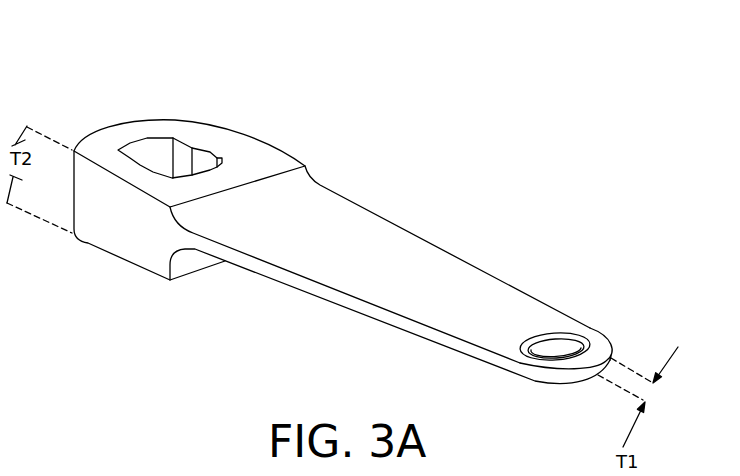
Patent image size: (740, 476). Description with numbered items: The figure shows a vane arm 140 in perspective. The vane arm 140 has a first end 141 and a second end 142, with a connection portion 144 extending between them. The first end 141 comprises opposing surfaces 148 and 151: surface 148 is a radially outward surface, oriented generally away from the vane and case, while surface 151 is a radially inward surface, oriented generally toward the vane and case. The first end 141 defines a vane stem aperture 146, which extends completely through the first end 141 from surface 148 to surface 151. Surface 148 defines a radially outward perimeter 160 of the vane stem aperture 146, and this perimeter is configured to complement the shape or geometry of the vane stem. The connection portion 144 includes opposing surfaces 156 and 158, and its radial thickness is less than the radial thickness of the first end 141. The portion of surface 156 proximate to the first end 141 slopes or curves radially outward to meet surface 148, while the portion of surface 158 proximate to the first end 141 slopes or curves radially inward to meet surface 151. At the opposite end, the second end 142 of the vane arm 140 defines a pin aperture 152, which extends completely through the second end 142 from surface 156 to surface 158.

The vane arm 140 is at (119, 84).
The first end 141 is at (92, 143).
The second end 142 is at (600, 343).
The connection portion 144 is at (350, 232).
The vane stem aperture 146 is at (158, 136).
The surface 148 is at (189, 163).
The surface 151 is at (153, 284).
The pin aperture 152 is at (553, 322).
The surface 156 is at (380, 264).
The surface 158 is at (368, 328).
The radially outward perimeter 160 is at (190, 141).